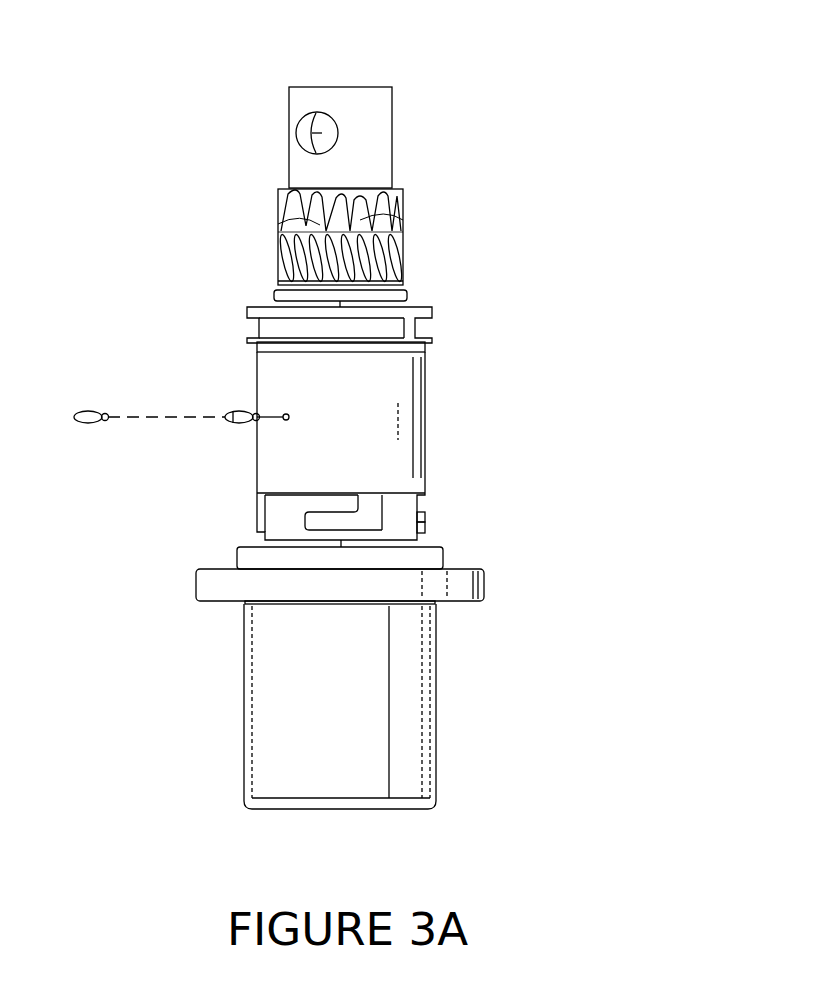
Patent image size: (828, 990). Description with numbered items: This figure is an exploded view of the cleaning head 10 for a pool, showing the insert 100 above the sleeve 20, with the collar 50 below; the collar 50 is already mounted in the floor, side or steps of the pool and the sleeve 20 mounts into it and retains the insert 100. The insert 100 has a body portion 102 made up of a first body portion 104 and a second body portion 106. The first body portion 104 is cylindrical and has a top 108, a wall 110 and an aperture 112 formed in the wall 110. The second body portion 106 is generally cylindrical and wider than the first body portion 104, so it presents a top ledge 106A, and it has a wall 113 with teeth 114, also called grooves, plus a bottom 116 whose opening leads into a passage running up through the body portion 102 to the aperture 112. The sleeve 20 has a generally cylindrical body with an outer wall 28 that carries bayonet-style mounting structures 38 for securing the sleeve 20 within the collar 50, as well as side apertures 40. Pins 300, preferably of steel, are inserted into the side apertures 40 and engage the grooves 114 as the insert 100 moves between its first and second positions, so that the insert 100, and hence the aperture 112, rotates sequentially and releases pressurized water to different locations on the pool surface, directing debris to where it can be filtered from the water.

The cleaning head 10 is at (590, 280).
The sleeve 20 is at (440, 430).
The outer wall 28 is at (399, 372).
The mounting structures 38 is at (372, 522).
The side apertures 40 is at (290, 418).
The collar 50 is at (452, 664).
The insert 100 is at (408, 133).
The body portion 102 is at (415, 182).
The first body portion 104 is at (393, 96).
The second body portion 106 is at (403, 250).
The top ledge 106A is at (289, 188).
The top 108 is at (345, 87).
The wall 110 is at (305, 99).
The aperture 112 is at (318, 133).
The wall 113 is at (280, 283).
The teeth 114 is at (280, 221).
The bottom 116 is at (407, 294).
The pins 300 is at (90, 424).